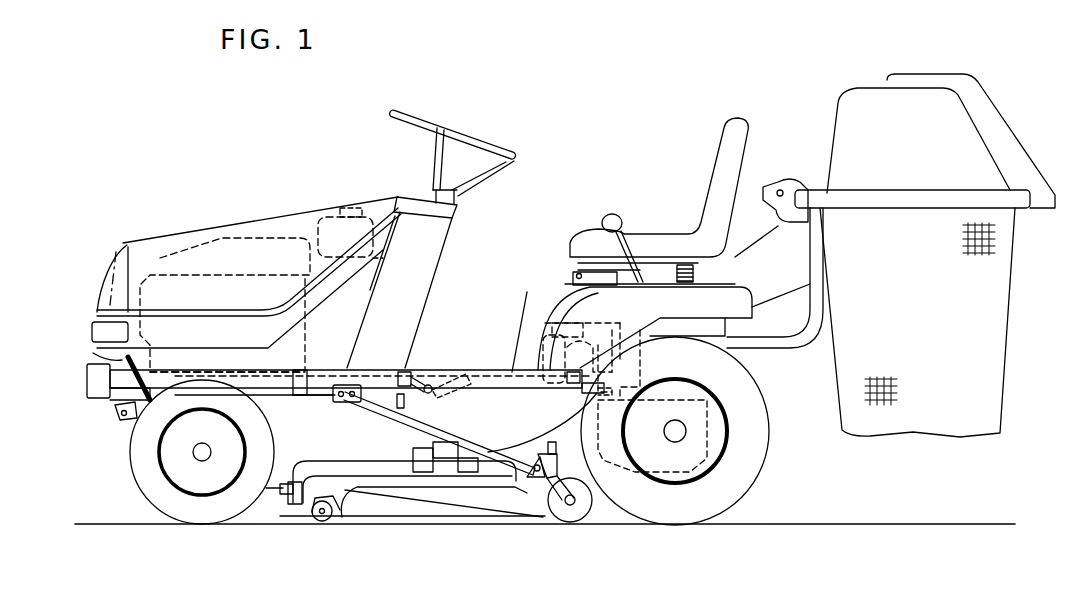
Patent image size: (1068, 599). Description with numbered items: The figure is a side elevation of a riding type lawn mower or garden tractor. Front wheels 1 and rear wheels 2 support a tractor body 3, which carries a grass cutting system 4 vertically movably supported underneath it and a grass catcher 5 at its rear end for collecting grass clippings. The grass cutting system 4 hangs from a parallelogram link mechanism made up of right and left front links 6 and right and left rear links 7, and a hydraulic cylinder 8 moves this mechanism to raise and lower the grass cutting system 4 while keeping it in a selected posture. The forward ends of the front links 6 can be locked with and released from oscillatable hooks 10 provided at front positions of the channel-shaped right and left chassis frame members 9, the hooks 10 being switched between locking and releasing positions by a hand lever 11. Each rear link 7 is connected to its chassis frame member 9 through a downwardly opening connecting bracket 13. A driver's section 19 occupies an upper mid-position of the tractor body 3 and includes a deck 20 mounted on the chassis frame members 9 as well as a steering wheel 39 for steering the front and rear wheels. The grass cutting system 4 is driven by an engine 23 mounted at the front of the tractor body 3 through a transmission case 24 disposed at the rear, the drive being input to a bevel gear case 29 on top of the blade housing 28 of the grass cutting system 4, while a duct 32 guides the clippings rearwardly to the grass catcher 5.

The front wheels 1 is at (195, 513).
The rear wheels 2 is at (681, 513).
The tractor body 3 is at (289, 176).
The grass cutting system 4 is at (435, 510).
The grass catcher 5 is at (998, 338).
The front links 6 is at (273, 492).
The rear links 7 is at (467, 435).
The hydraulic cylinder 8 is at (450, 368).
The chassis frame members 9 is at (566, 326).
The oscillatable hooks 10 is at (118, 415).
The hand lever 11 is at (93, 354).
The connecting bracket 13 is at (360, 378).
The driver's section 19 is at (612, 159).
The deck 20 is at (487, 362).
The engine 23 is at (188, 250).
The transmission case 24 is at (708, 430).
The blade housing 28 is at (533, 502).
The bevel gear case 29 is at (412, 448).
The duct 32 is at (798, 267).
The steering wheel 39 is at (480, 140).